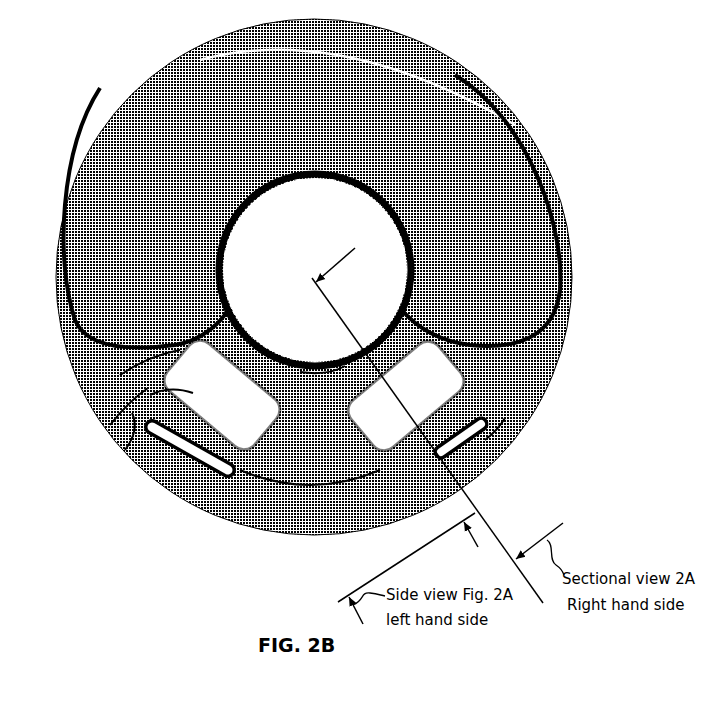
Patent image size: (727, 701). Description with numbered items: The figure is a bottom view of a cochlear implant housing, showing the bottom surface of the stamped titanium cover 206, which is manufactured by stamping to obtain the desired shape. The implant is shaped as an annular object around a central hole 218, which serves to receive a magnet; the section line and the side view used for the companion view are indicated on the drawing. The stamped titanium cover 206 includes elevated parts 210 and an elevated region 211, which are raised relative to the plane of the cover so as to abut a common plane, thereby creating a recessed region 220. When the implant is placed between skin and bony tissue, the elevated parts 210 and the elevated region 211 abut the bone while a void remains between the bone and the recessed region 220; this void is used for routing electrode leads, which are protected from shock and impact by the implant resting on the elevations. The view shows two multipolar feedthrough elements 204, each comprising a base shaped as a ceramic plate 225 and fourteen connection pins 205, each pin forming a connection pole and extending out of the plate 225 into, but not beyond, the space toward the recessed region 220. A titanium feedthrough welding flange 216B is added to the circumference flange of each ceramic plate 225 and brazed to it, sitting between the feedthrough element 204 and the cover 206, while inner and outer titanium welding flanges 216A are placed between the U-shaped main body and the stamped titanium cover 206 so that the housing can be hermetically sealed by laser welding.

The multipolar feedthrough element 204 is at (354, 477).
The connection pin 205 is at (132, 413).
The stamped titanium cover 206 is at (496, 433).
The elevated parts 210 is at (182, 467).
The elevated region 211 is at (478, 147).
The titanium welding flange 216A is at (326, 190).
The feedthrough welding flange 216B is at (148, 388).
The central hole 218 is at (233, 208).
The recessed region 220 is at (328, 369).
The ceramic plate 225 is at (250, 436).